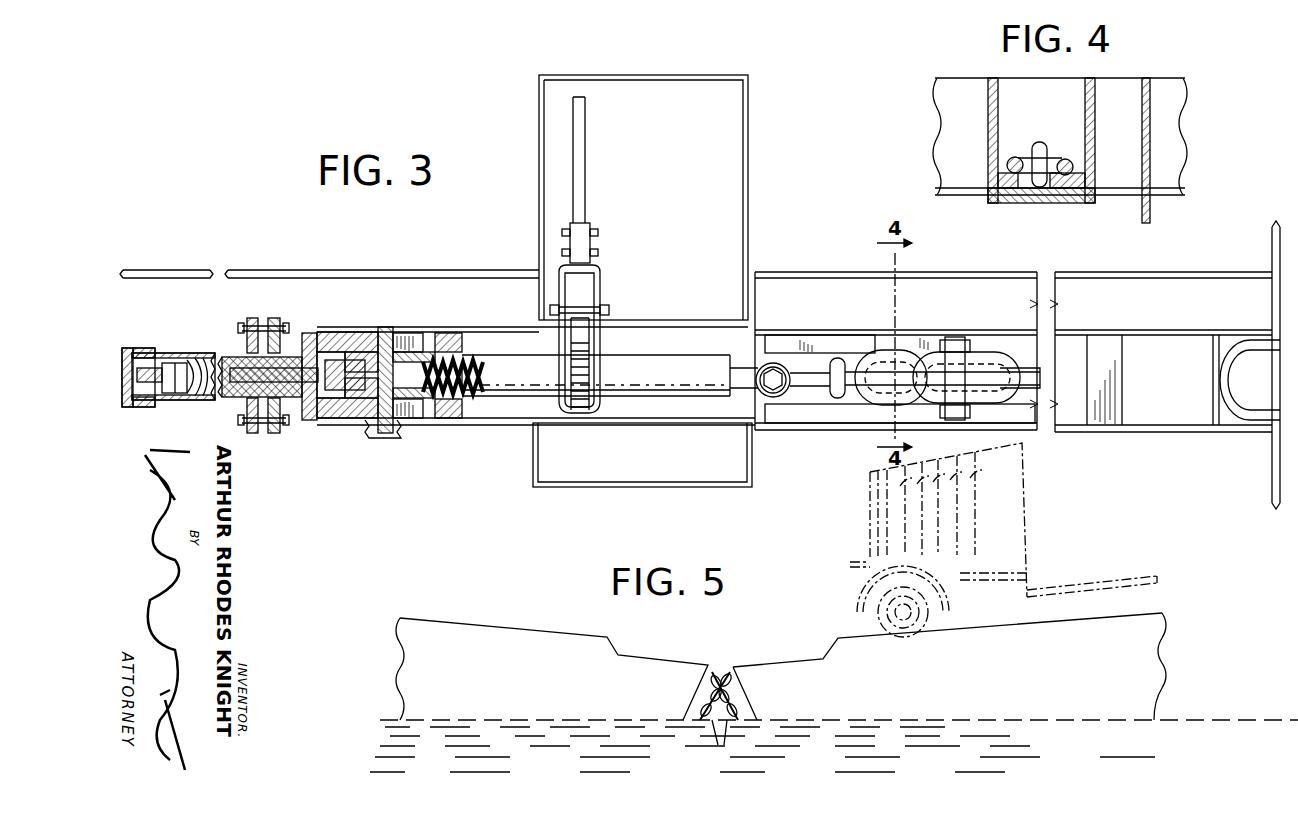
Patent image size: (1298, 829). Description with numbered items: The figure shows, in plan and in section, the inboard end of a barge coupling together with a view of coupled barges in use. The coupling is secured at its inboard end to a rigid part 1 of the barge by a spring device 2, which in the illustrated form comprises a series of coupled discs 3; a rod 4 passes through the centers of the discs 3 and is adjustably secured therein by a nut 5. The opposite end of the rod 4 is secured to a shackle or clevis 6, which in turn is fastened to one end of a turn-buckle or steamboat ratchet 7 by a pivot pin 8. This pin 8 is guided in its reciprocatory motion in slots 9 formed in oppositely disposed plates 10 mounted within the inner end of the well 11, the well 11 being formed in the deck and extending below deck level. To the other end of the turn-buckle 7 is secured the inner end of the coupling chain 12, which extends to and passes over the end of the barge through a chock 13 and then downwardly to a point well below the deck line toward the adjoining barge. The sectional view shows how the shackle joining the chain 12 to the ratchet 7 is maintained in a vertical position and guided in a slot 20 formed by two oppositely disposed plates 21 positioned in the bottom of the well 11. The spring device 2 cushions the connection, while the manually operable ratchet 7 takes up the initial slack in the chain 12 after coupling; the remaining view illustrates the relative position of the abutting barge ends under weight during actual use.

In FIG. 3, the rigid part 1 is at (310, 418).
In FIG. 3, the spring device 2 is at (242, 396).
In FIG. 3, the coupled discs 3 is at (237, 360).
In FIG. 3, the rod 4 is at (160, 360).
In FIG. 3, the nut 5 is at (178, 388).
In FIG. 3, the shackle or clevis 6 is at (355, 420).
In FIG. 3, the turn-buckle or steamboat ratchet 7 is at (586, 356).
In FIG. 3, the pivot pin 8 is at (387, 332).
In FIG. 3, the slots 9 is at (412, 340).
In FIG. 3, the plates 10 is at (345, 332).
In FIG. 3, the well 11 is at (631, 206).
In FIG. 3, the coupling chain 12 is at (990, 355).
In FIG. 5, the coupling chain 12 is at (727, 745).
In FIG. 3, the chock 13 is at (1226, 388).
In FIG. 3, the slot 20 is at (800, 364).
In FIG. 4, the slot 20 is at (1050, 190).
In FIG. 3, the plates 21 is at (838, 345).
In FIG. 4, the plates 21 is at (1062, 158).